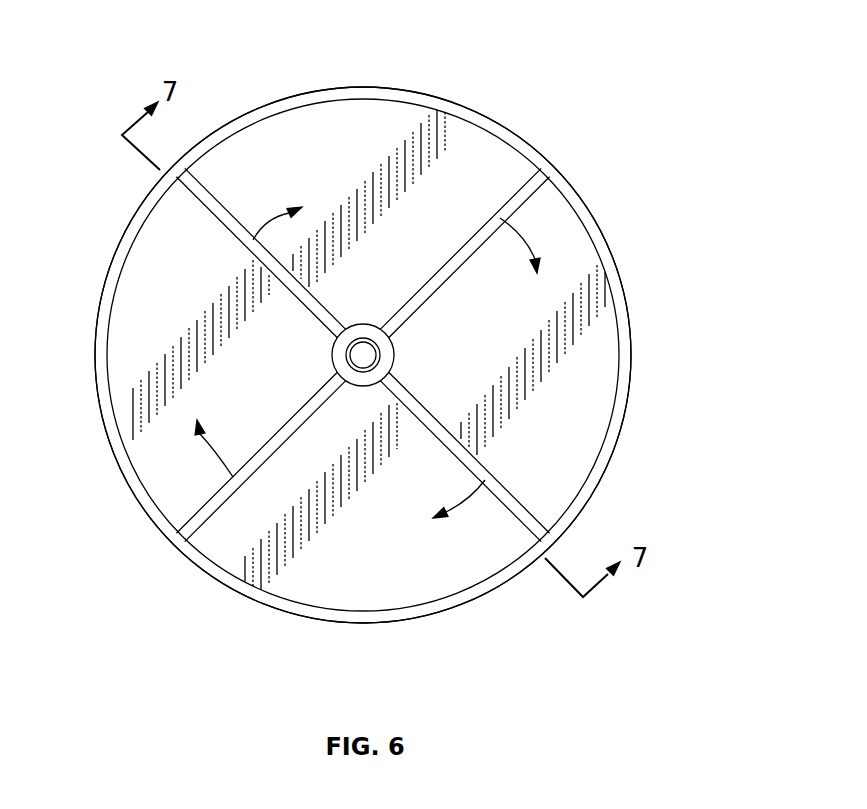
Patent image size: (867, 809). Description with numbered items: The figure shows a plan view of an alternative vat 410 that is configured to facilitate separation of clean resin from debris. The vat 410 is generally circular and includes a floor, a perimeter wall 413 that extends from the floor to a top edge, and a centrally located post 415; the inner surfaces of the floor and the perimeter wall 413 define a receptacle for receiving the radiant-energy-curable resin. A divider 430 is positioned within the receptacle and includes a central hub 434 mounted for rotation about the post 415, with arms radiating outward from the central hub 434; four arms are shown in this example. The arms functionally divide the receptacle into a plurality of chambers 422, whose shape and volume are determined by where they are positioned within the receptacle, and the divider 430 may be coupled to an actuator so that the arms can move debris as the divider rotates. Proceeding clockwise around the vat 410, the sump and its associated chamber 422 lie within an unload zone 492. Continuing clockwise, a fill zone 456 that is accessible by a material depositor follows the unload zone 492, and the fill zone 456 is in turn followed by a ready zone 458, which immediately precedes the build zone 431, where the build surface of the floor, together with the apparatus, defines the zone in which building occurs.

The vat 410 is at (474, 65).
The perimeter wall 413 is at (622, 327).
The post 415 is at (365, 356).
The chambers 422 is at (303, 182).
The divider 430 is at (156, 261).
The build zone 431 is at (259, 129).
The central hub 434 is at (365, 324).
The fill zone 456 is at (456, 541).
The ready zone 458 is at (120, 399).
The unload zone 492 is at (588, 243).